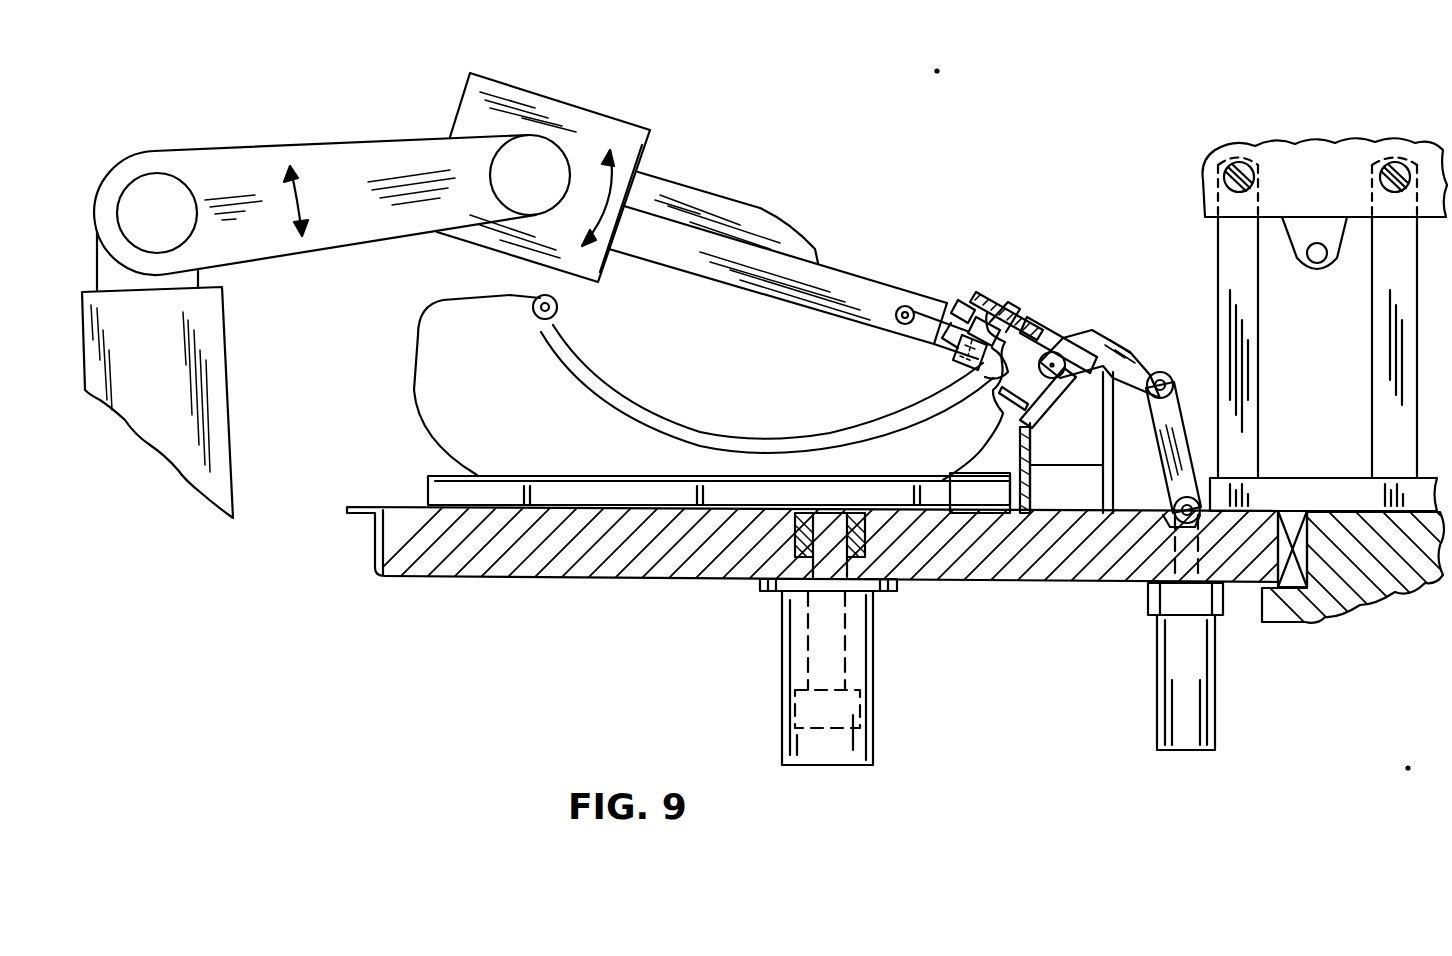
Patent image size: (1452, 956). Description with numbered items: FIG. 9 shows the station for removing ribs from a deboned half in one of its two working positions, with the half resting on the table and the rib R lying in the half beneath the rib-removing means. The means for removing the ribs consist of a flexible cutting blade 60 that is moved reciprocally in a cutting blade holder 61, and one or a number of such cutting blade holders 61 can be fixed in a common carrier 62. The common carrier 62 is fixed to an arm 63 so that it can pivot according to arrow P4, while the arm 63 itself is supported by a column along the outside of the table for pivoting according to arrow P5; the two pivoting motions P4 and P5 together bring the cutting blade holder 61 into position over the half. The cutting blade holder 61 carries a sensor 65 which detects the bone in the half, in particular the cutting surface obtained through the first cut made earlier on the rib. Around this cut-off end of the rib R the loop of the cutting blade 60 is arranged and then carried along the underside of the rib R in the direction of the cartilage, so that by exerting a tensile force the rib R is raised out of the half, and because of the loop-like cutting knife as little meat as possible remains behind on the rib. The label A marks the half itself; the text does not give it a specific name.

The flexible cutting blade 60 is at (953, 363).
The cutting blade holder 61 is at (750, 283).
The common carrier 62 is at (597, 120).
The arm 63 is at (368, 152).
The sensor 65 is at (958, 323).
The rib R is at (812, 434).
The article A is at (709, 391).
The arrow P4 is at (607, 213).
The arrow P5 is at (292, 205).